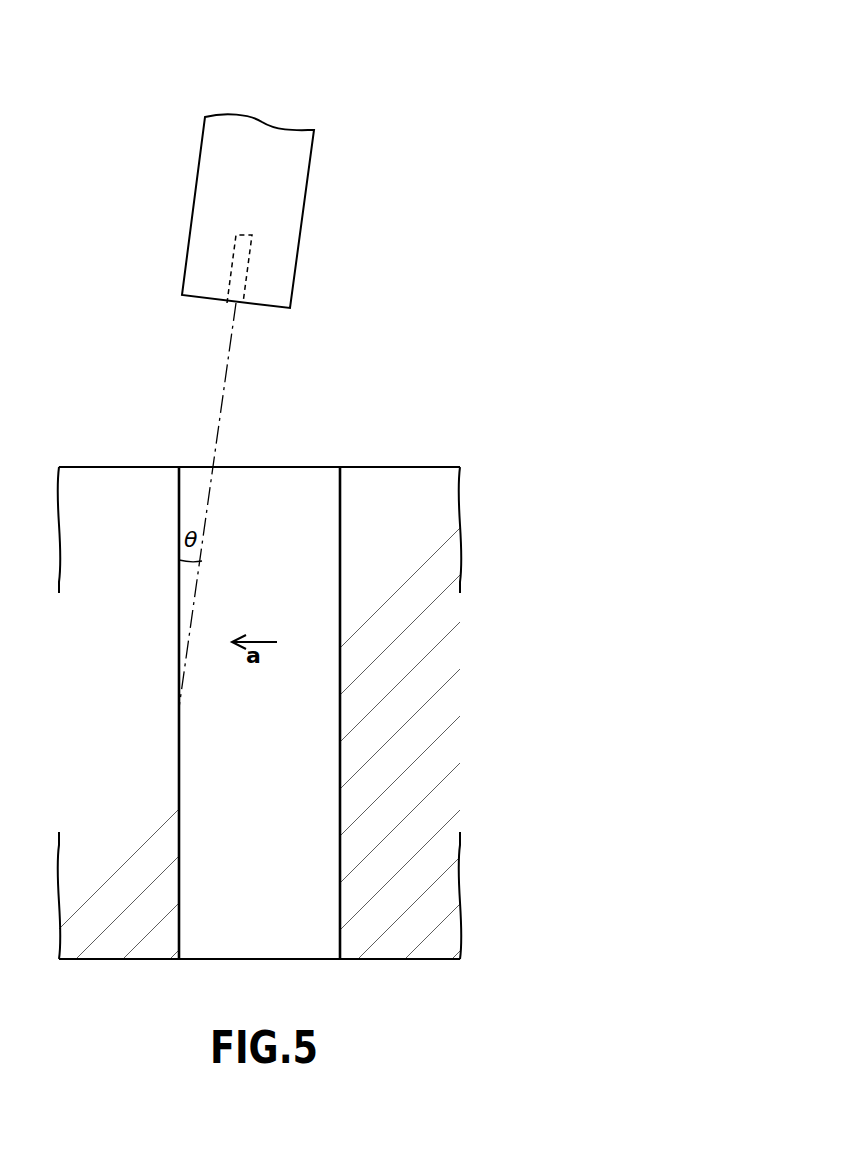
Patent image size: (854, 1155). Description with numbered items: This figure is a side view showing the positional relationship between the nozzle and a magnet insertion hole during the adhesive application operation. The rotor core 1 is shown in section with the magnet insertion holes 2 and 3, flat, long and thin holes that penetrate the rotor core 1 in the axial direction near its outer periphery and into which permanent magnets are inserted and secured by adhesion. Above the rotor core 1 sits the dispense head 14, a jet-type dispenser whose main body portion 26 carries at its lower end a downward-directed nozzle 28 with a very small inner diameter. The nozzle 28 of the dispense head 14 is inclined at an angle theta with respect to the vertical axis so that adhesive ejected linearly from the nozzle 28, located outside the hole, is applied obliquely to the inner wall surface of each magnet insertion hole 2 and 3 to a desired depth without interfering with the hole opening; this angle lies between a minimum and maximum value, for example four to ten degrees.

The rotor core 1 is at (425, 488).
The magnet insertion hole 2 is at (262, 680).
The magnet insertion hole 3 is at (340, 513).
The dispense head 14 is at (330, 237).
The main body portion 26 is at (292, 212).
The nozzle 28 is at (250, 267).